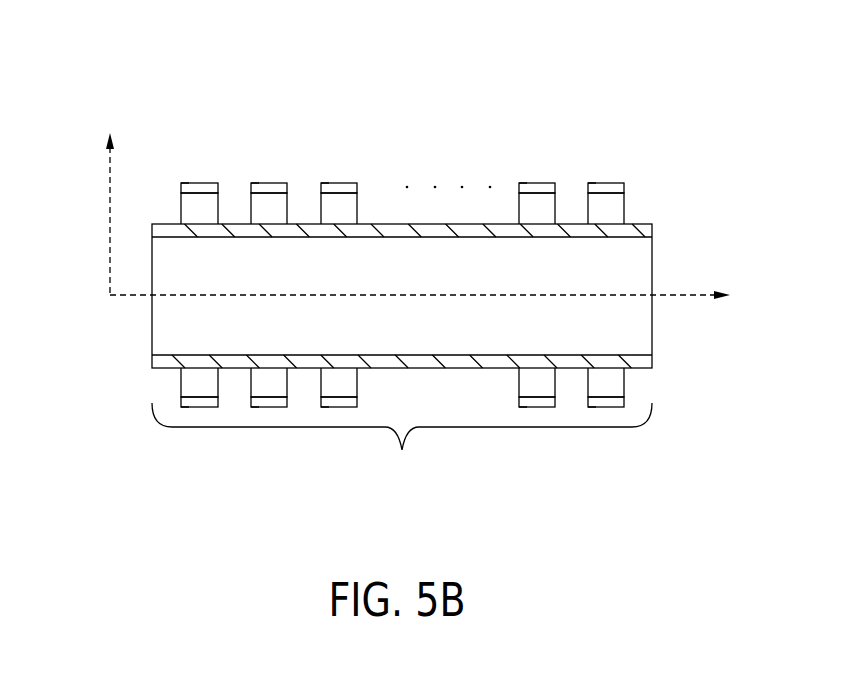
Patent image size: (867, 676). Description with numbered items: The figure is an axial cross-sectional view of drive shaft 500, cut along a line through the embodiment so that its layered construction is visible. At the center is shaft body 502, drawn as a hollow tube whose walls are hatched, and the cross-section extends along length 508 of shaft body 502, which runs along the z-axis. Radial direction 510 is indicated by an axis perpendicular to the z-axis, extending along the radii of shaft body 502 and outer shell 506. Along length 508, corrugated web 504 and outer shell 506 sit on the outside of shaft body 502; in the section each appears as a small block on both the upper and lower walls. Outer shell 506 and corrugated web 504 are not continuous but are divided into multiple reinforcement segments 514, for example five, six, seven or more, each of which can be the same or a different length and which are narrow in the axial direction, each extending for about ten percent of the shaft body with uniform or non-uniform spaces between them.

The drive shaft 500 is at (166, 101).
The shaft body 502 is at (652, 232).
The corrugated web 504 is at (215, 186).
The outer shell 506 is at (208, 200).
The length 508 is at (402, 446).
The radial direction 510 is at (108, 205).
The reinforcement segments 514 is at (190, 185).